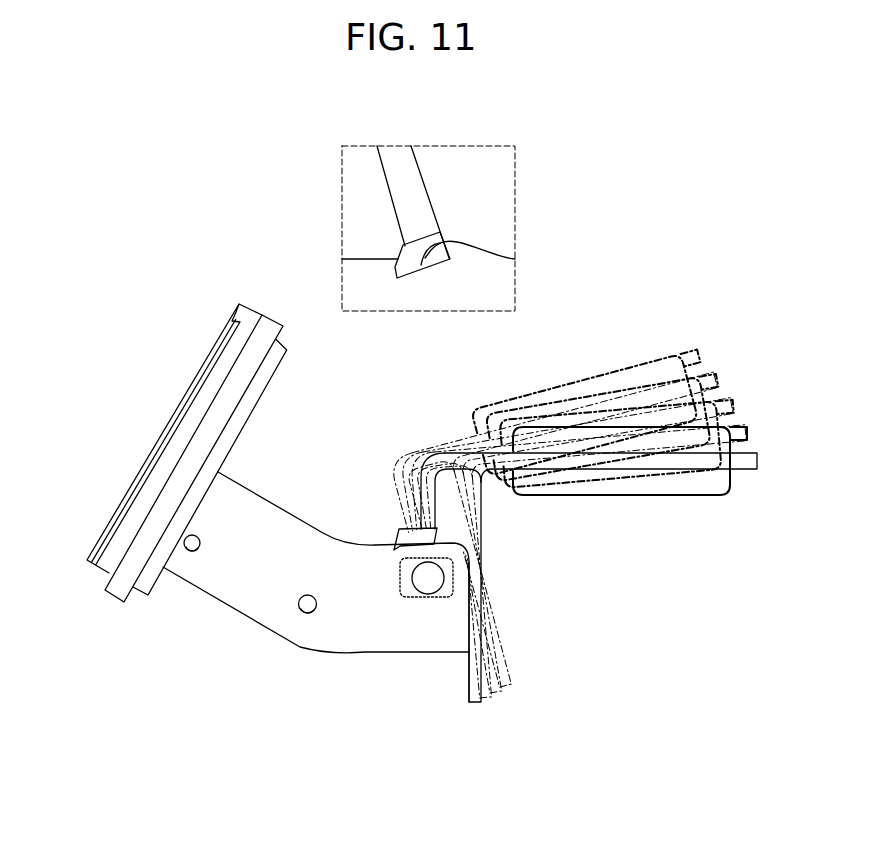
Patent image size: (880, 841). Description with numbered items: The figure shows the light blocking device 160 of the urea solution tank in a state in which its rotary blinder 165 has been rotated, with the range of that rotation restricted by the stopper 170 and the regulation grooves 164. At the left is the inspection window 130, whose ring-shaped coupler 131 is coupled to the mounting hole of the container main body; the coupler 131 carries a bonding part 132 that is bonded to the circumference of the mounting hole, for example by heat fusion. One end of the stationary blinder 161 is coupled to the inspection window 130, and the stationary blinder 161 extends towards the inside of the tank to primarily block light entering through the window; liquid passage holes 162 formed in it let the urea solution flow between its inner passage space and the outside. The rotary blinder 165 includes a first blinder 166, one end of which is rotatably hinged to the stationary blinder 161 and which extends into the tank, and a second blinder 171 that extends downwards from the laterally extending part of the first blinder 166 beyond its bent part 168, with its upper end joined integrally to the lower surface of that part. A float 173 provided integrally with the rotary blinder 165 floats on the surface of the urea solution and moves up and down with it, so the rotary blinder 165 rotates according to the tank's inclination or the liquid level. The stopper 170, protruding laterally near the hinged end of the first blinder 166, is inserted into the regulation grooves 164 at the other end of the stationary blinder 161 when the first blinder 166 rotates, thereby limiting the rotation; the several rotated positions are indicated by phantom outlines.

The inspection window 130 is at (209, 516).
The coupler 131 is at (168, 442).
The bonding part 132 is at (284, 329).
The light blocking device 160 is at (460, 401).
The stationary blinder 161 is at (226, 577).
The liquid passage holes 162 is at (311, 613).
The regulation grooves 164 is at (397, 542).
The rotary blinder 165 is at (648, 521).
The first blinder 166 is at (430, 470).
The bent part 168 is at (418, 192).
The stopper 170 is at (410, 530).
The second blinder 171 is at (481, 550).
The float 173 is at (677, 490).